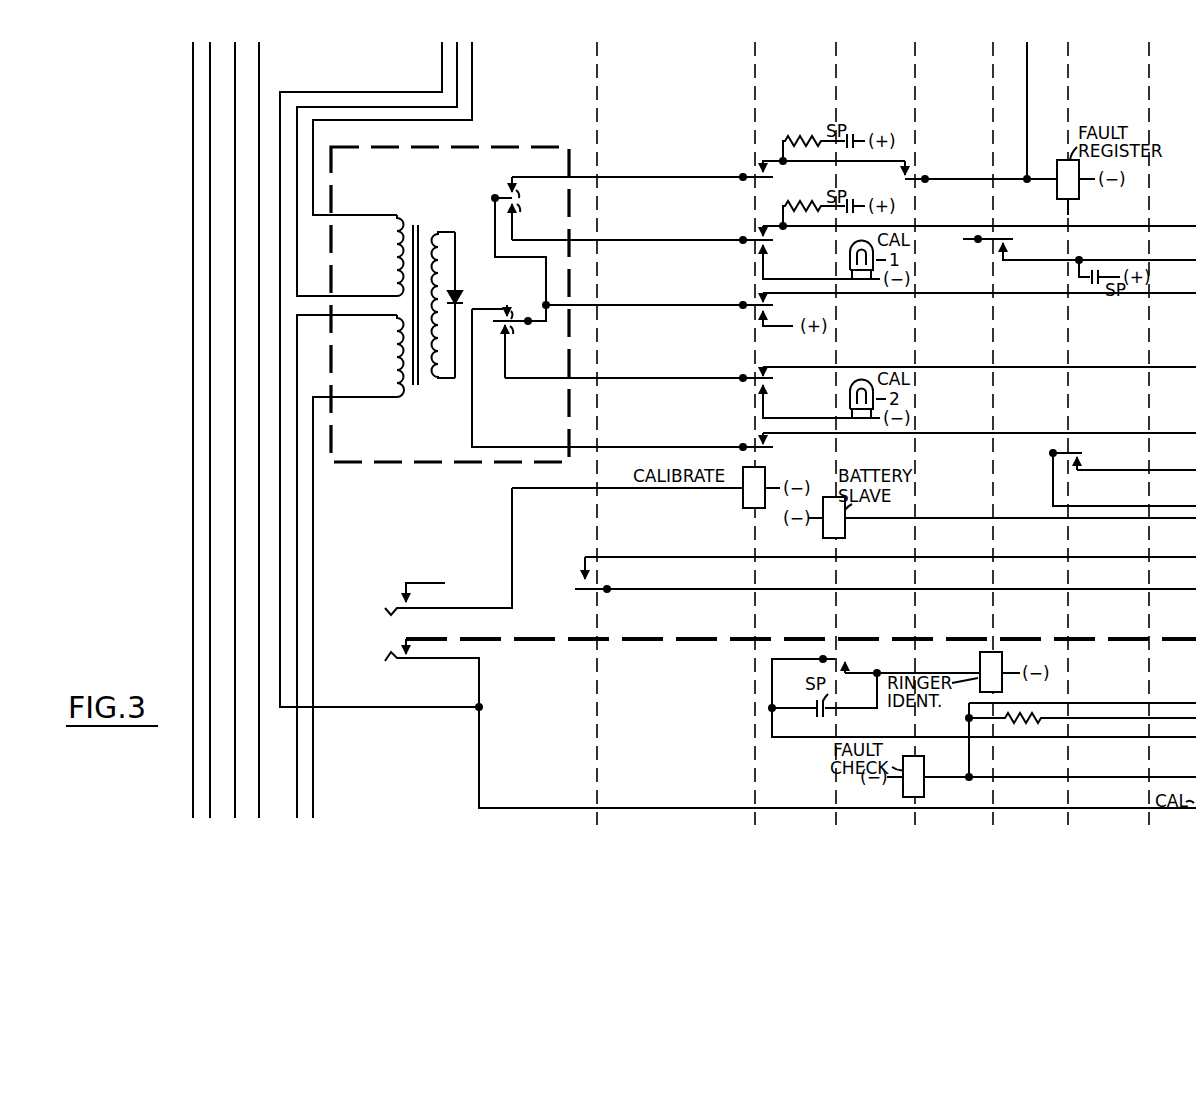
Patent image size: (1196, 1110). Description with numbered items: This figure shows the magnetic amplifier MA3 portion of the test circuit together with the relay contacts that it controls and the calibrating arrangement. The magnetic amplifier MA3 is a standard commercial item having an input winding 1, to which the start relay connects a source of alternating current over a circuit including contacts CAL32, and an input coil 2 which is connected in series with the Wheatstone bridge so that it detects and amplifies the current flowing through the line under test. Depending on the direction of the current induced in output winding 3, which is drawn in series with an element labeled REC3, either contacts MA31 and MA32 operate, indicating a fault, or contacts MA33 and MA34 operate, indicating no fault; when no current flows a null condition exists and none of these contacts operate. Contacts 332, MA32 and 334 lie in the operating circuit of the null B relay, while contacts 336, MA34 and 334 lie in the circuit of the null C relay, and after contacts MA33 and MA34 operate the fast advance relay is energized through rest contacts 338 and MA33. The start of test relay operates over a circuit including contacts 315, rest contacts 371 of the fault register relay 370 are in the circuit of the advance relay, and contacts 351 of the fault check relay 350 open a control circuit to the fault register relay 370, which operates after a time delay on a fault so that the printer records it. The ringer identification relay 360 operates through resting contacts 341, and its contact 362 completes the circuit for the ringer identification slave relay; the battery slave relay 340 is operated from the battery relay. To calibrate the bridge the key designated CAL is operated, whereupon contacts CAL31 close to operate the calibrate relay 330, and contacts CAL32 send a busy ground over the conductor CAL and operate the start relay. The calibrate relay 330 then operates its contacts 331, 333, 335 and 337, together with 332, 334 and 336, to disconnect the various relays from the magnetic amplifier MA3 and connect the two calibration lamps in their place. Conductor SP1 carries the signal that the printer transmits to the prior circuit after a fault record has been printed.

The contacts 315 is at (598, 583).
The calibrate relay 330 is at (755, 433).
The contacts 331 is at (770, 181).
The contacts 332 is at (754, 237).
The contacts 333 is at (754, 249).
The contacts 334 is at (754, 289).
The contacts 335 is at (754, 314).
The contacts 336 is at (754, 375).
The contacts 337 is at (754, 389).
The rest contacts 338 is at (754, 442).
The battery slave relay 340 is at (836, 433).
The resting contacts 341 is at (846, 666).
The fault check relay 350 is at (915, 433).
The contacts 351 is at (903, 180).
The ringer identification relay 360 is at (993, 433).
The contact 362 is at (996, 248).
The fault register relay 370 is at (1068, 433).
The rest contacts 371 is at (1081, 456).
The magnetic amplifier MA3 is at (450, 304).
The contacts MA31 is at (540, 187).
The contacts MA32 is at (538, 222).
The contacts MA33 is at (500, 304).
The contacts MA34 is at (530, 351).
The rectifier REC3 is at (486, 305).
The contacts CAL31 is at (442, 594).
The contacts CAL32 is at (790, 723).
The calibrate key CAL is at (373, 639).
The conductor SP1 is at (191, 204).
The winding 1 is at (365, 262).
The input winding 2 is at (362, 370).
The output winding 3 is at (452, 325).